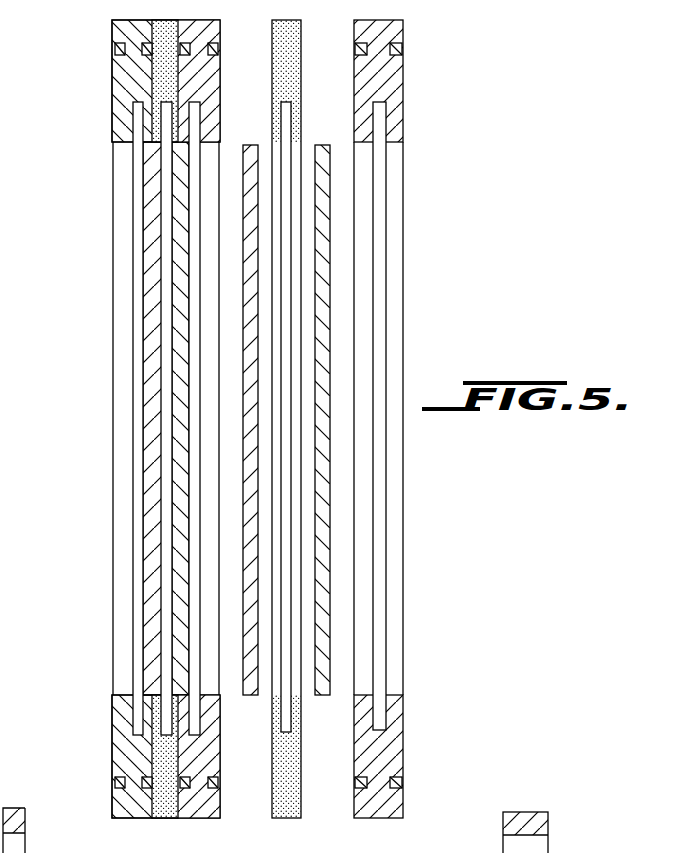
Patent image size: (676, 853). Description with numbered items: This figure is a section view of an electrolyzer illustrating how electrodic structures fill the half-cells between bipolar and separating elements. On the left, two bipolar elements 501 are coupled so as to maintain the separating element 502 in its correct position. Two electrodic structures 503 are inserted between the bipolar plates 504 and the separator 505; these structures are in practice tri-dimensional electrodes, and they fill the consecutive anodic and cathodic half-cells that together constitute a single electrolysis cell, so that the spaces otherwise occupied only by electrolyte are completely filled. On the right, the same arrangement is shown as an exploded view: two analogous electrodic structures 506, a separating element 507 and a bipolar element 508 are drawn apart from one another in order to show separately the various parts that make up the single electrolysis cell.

The bipolar elements 501 is at (150, 20).
The separating element 502 is at (162, 818).
The electrodic structures 503 is at (185, 573).
The bipolar plates 504 is at (200, 237).
The separator 505 is at (168, 342).
The electrodic structures 506 is at (328, 718).
The separating element 507 is at (275, 818).
The bipolar element 508 is at (403, 27).